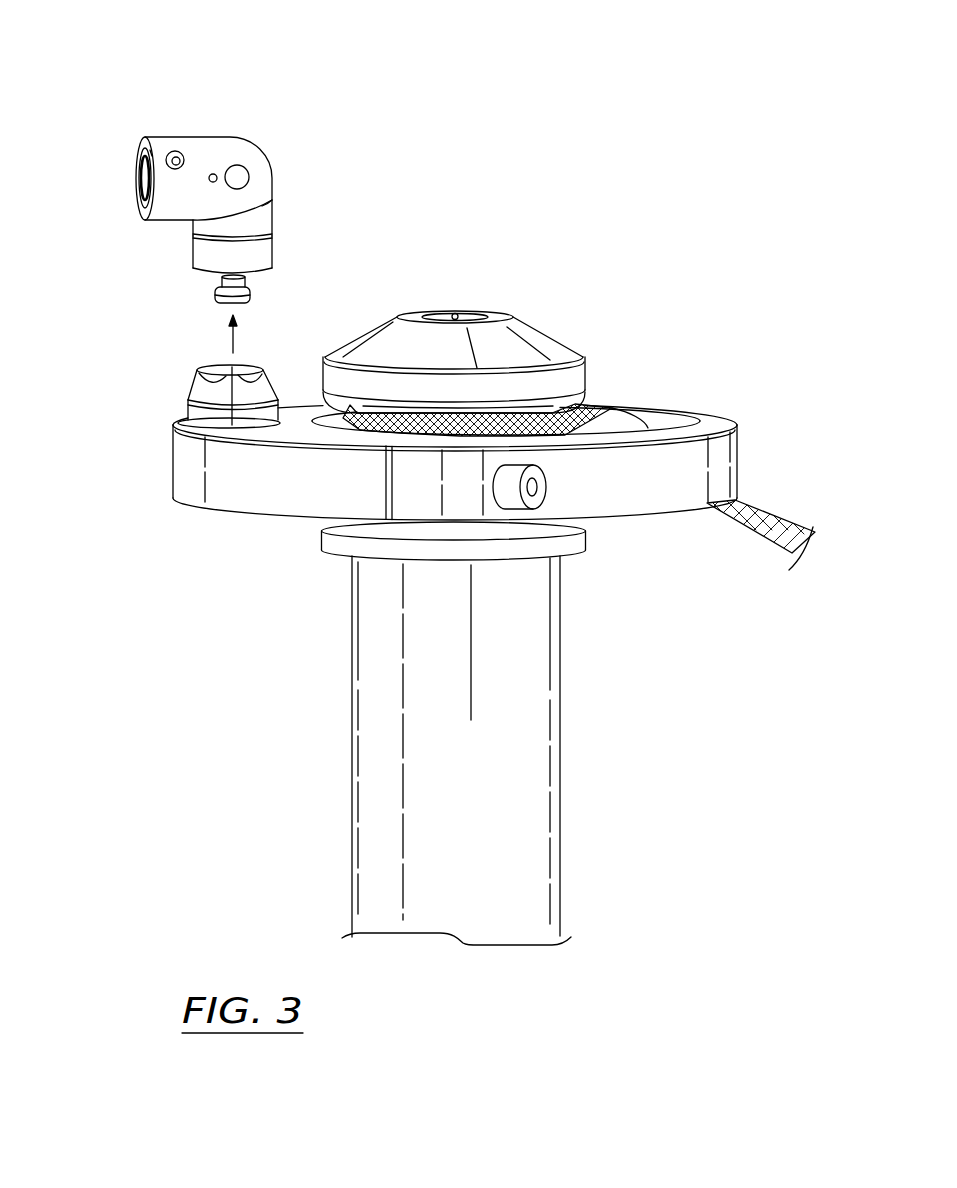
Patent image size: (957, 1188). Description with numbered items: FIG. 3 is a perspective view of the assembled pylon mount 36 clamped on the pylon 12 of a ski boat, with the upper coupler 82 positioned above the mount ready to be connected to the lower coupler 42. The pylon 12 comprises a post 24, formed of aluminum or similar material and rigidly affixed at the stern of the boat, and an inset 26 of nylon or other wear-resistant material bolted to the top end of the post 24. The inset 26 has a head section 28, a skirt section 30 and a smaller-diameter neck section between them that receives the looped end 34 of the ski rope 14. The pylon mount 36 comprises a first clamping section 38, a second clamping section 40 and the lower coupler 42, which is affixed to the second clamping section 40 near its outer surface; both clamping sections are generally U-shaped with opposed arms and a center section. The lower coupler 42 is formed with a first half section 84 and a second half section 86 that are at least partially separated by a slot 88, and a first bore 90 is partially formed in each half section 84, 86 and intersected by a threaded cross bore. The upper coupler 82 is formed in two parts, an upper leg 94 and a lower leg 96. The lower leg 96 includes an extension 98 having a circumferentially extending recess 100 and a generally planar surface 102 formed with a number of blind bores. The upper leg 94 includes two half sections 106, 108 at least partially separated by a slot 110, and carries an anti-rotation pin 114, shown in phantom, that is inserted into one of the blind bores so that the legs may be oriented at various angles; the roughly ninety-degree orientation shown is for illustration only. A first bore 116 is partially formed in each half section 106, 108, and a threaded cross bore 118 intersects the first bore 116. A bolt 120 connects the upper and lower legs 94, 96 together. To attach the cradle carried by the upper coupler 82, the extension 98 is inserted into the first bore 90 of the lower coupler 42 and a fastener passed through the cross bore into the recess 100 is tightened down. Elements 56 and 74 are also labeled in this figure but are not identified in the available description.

The pylon 12 is at (495, 594).
The ski rope 14 is at (777, 520).
The post 24 is at (561, 774).
The inset 26 is at (508, 328).
The head section 28 is at (533, 323).
The skirt section 30 is at (557, 547).
The looped end 34 is at (570, 417).
The pylon mount 36 is at (488, 452).
The first clamping section 38 is at (662, 485).
The second clamping section 40 is at (193, 463).
The lower coupler 42 is at (190, 437).
The opening in arm 56 is at (663, 417).
The set screw 74 is at (540, 490).
The upper coupler 82 is at (218, 172).
The first half section 84 is at (215, 437).
The second half section 86 is at (273, 380).
The slot 88 is at (233, 427).
The first bore 90 is at (237, 372).
The upper leg 94 is at (203, 142).
The lower leg 96 is at (265, 265).
The extension 98 is at (216, 300).
The circumferentially extending recess 100 is at (244, 288).
The generally planar surface 102 is at (263, 212).
The half section 106 is at (138, 155).
The half section 108 is at (152, 153).
The slot 110 is at (140, 147).
The anti-rotation pin 114 is at (214, 172).
The first bore 116 is at (142, 176).
The cross bore 118 is at (177, 167).
The bolt 120 is at (240, 176).